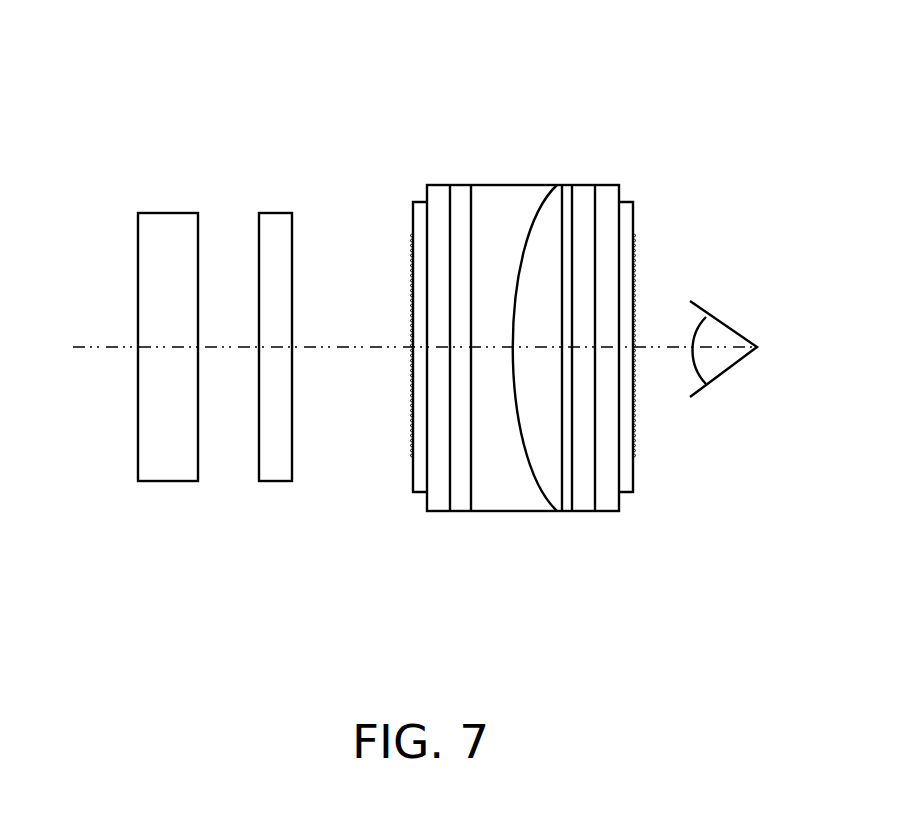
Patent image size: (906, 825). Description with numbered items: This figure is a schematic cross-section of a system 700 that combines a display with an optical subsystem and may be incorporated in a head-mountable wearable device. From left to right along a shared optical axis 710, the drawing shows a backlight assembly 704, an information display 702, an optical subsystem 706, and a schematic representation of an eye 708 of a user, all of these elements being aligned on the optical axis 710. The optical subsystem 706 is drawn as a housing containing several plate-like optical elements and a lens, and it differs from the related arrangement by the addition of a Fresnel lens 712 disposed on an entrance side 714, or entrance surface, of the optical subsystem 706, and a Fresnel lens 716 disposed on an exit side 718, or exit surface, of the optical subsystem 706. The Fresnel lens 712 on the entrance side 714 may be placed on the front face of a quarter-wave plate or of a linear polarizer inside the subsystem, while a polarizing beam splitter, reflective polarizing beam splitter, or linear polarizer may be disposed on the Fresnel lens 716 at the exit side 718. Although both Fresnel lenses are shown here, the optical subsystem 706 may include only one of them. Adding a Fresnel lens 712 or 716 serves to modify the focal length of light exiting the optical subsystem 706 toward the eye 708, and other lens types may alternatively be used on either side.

The system 700 is at (247, 50).
The information display 702 is at (276, 213).
The backlight assembly 704 is at (165, 213).
The optical subsystem 706 is at (524, 146).
The eye 708 is at (706, 305).
The optical axis 710 is at (117, 347).
The Fresnel lens 712 is at (420, 493).
The entrance side 714 is at (420, 198).
The Fresnel lens 716 is at (630, 494).
The exit side 718 is at (625, 199).